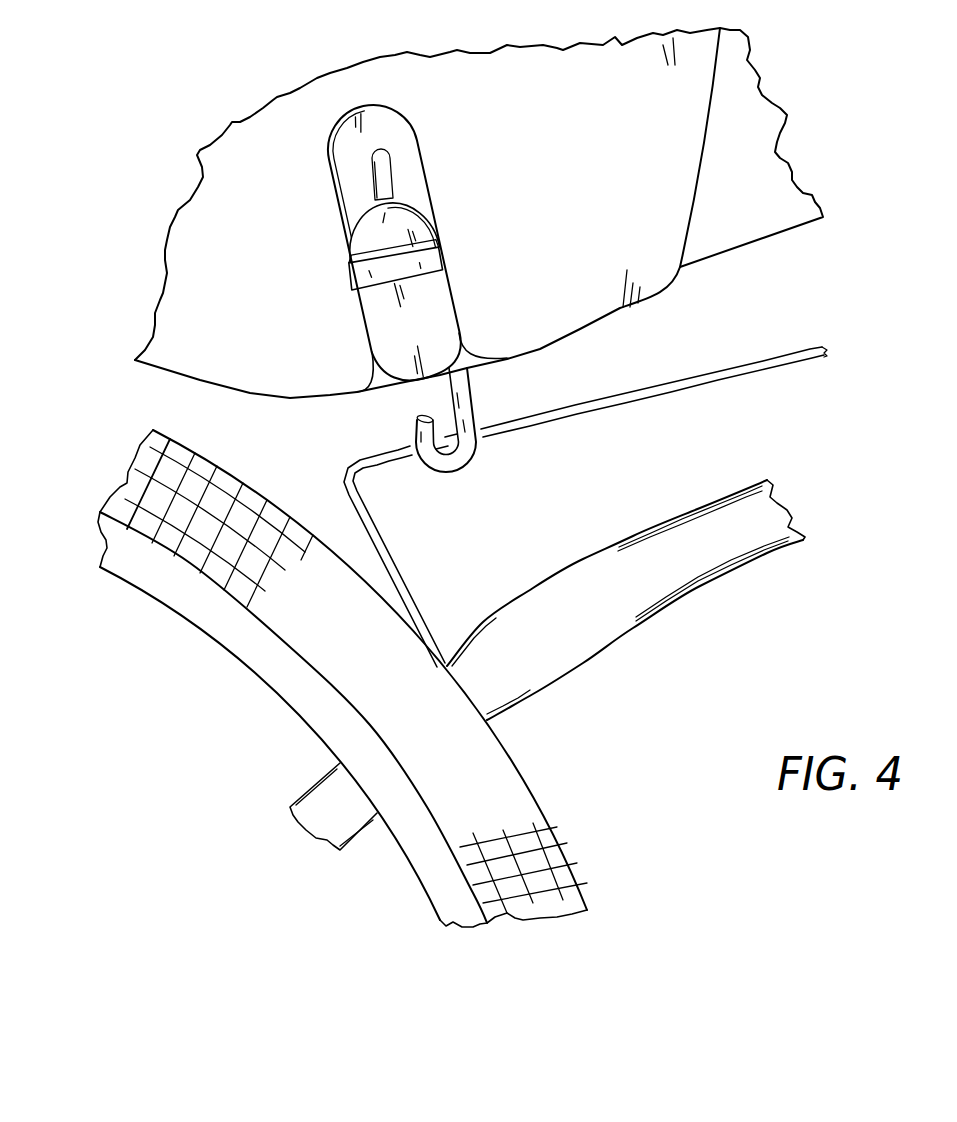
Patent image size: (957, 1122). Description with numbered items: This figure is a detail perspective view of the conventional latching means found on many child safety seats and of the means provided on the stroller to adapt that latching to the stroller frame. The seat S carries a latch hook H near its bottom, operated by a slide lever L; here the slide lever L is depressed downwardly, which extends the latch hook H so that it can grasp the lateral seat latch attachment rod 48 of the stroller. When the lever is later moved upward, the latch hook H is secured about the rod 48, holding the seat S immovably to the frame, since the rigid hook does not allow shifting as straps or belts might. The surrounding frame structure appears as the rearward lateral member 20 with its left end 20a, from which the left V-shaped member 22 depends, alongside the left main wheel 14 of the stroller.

The seat S is at (548, 209).
The slide lever L is at (452, 291).
The latch hook H is at (478, 403).
The lateral seat latch attachment rod 48 is at (637, 404).
The left main wheel 14 is at (560, 843).
The rearward lateral member 20 is at (771, 553).
The left end 20a is at (570, 654).
The left V-shaped member 22 is at (306, 797).